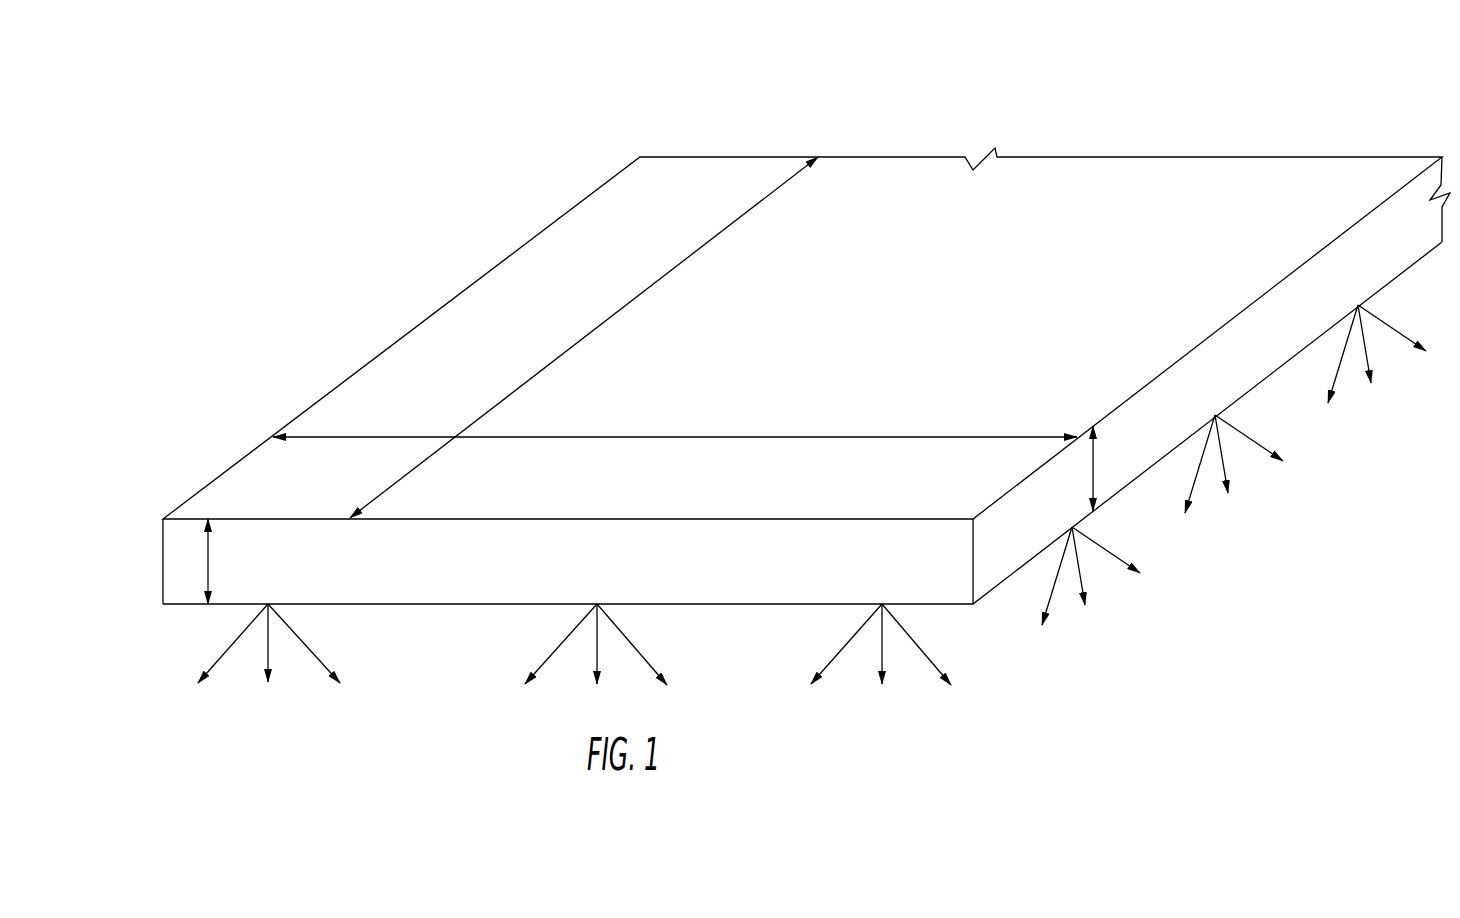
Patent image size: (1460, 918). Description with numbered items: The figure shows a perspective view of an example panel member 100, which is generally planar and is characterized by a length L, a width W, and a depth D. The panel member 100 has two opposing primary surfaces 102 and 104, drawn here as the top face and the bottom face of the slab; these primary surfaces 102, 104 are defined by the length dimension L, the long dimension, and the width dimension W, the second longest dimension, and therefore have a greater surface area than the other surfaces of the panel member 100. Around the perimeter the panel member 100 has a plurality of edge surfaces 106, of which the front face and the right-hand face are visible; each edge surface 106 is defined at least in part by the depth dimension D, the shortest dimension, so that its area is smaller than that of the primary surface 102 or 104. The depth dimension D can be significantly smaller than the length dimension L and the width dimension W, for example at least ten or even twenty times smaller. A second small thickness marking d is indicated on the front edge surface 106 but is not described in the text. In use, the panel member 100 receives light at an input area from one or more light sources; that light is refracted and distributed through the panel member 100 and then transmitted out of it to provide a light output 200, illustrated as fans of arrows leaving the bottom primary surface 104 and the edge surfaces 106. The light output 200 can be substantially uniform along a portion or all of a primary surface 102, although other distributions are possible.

The panel member 100 is at (766, 376).
The primary surface 102 is at (368, 398).
The primary surface 104 is at (510, 607).
The edge surface 106 is at (187, 564).
The light output 200 is at (285, 677).
The length dimension L is at (600, 318).
The width dimension W is at (726, 436).
The depth dimension D is at (1095, 468).
The thickness d is at (212, 562).